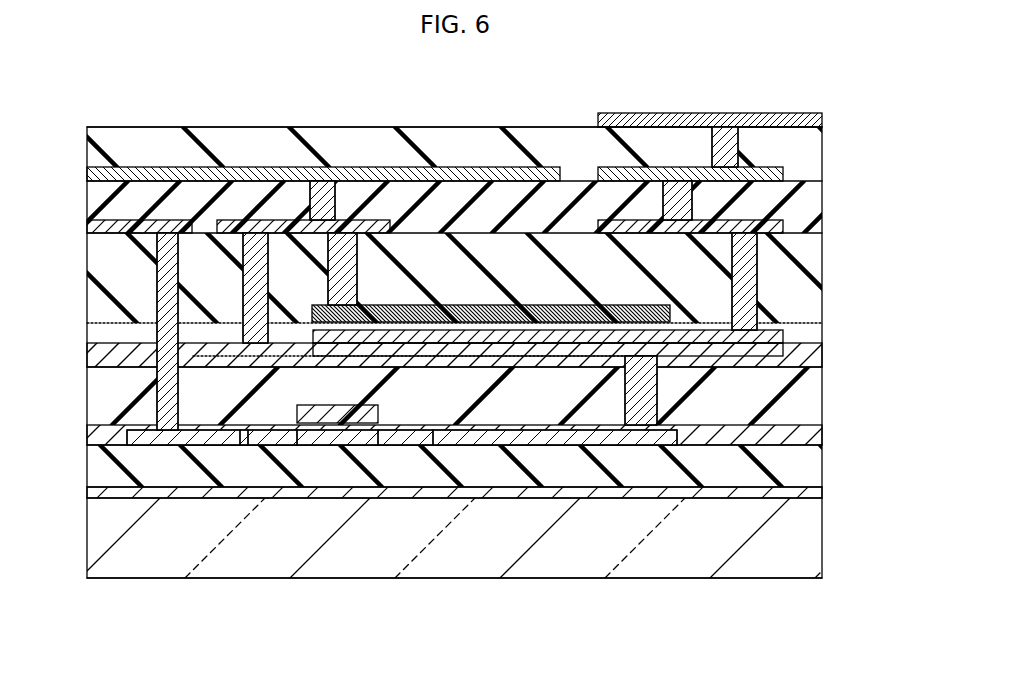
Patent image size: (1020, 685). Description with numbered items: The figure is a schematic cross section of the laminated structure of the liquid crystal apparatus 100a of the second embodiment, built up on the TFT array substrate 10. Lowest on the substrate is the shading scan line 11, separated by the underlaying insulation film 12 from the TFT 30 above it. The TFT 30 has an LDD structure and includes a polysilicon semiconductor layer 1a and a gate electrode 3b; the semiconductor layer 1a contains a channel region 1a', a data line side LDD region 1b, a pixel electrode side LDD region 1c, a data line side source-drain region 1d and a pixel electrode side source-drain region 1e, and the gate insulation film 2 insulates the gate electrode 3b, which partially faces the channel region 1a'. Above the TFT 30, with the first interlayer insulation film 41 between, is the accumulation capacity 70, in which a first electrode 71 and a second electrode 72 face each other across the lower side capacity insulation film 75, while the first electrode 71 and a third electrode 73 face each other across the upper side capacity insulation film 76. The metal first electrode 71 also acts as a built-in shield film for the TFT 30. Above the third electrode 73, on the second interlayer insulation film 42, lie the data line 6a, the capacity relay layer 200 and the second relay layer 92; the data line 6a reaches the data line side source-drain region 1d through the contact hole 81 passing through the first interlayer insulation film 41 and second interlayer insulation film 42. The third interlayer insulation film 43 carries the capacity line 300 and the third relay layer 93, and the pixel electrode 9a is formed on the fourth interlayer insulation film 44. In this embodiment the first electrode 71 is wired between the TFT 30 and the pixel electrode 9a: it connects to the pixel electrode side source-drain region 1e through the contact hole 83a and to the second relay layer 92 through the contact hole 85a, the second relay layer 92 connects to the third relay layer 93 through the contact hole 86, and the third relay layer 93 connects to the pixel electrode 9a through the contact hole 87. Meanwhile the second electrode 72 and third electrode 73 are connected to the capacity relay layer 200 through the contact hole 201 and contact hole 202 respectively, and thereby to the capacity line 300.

The liquid crystal apparatus 100a is at (700, 67).
The TFT array substrate 10 is at (812, 536).
The scan line 11 is at (812, 494).
The underlaying insulation film 12 is at (812, 469).
The gate insulation film 2 is at (812, 439).
The gate electrode 3b is at (378, 414).
The semiconductor layer 1a is at (174, 526).
The channel region 1a' is at (337, 526).
The data line side LDD region 1b is at (250, 447).
The pixel electrode side LDD region 1c is at (407, 447).
The data line side source-drain region 1d is at (200, 445).
The pixel electrode side source-drain region 1e is at (488, 449).
The TFT 30 is at (292, 450).
The first interlayer insulation film 41 is at (812, 394).
The second interlayer insulation film 42 is at (812, 259).
The third interlayer insulation film 43 is at (812, 218).
The fourth interlayer insulation film 44 is at (812, 132).
The accumulation capacity 70 is at (547, 193).
The first electrode 71 is at (518, 340).
The second electrode 72 is at (557, 357).
The third electrode 73 is at (458, 305).
The lower side capacity insulation film 75 is at (800, 357).
The upper side capacity insulation film 76 is at (808, 330).
The contact hole 81 is at (156, 394).
The contact hole 83a is at (626, 388).
The contact hole 85a is at (733, 262).
The contact hole 86 is at (687, 200).
The contact hole 87 is at (720, 134).
The data line 6a is at (92, 224).
The second relay layer 92 is at (632, 227).
The third relay layer 93 is at (780, 170).
The capacity relay layer 200 is at (260, 232).
The contact hole 201 is at (266, 267).
The contact hole 202 is at (357, 263).
The capacity line 300 is at (181, 177).
The pixel electrode 9a is at (787, 110).